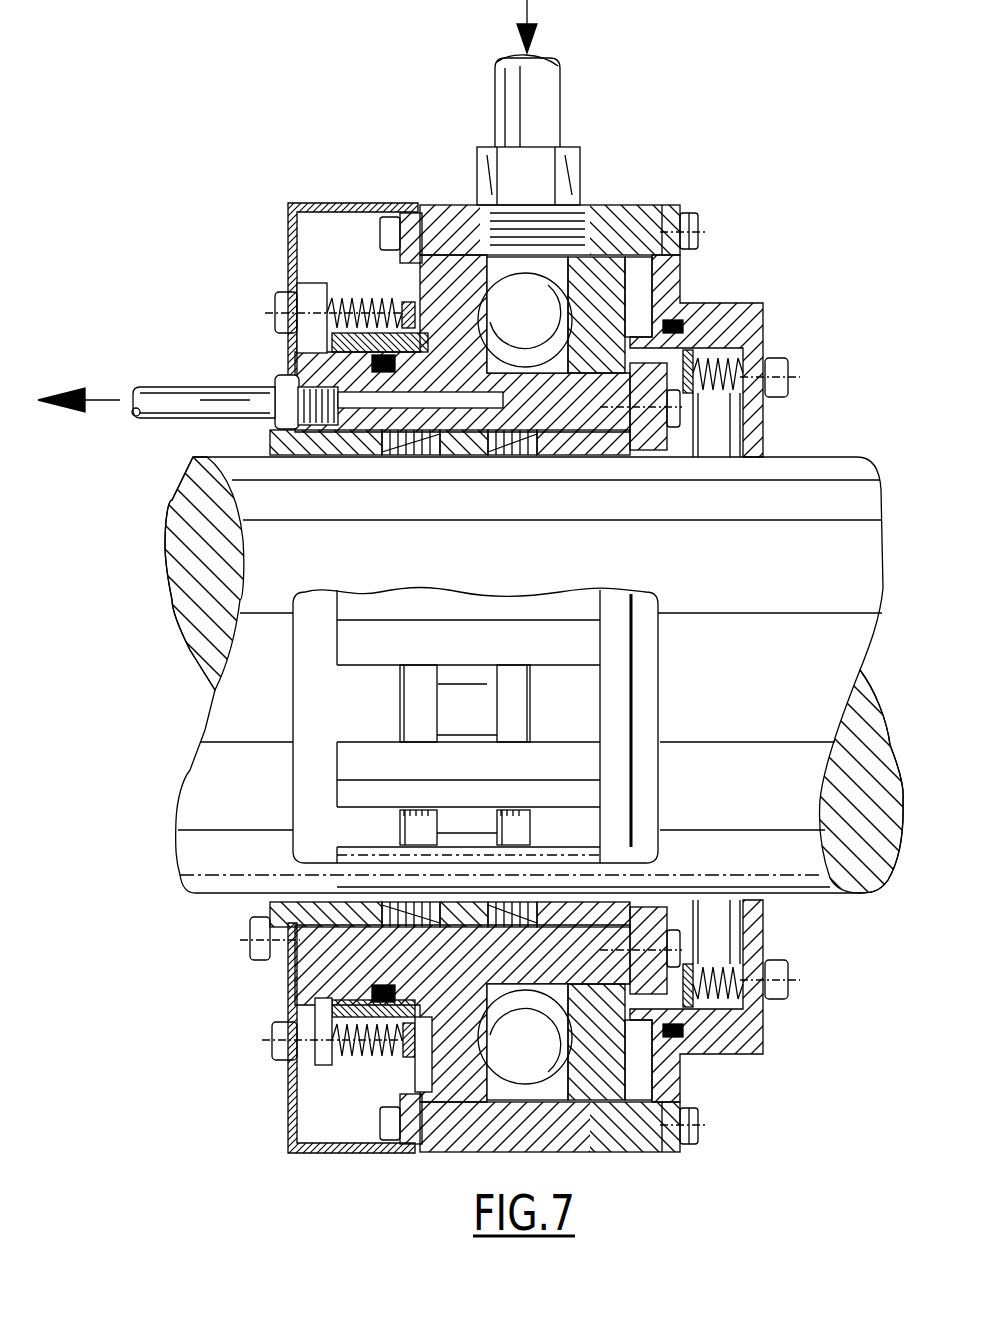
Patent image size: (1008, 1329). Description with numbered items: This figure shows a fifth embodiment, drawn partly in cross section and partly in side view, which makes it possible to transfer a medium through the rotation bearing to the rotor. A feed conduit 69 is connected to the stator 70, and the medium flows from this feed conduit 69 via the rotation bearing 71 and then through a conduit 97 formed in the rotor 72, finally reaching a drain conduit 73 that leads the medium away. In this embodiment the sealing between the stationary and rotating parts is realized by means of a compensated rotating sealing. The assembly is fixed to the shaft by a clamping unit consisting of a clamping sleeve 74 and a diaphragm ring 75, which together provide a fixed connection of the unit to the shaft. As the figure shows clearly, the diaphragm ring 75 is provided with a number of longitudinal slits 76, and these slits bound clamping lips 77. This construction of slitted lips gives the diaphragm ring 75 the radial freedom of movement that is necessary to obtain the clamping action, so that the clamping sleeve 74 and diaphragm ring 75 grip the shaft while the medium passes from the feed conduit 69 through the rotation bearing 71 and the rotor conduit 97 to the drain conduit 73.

The feed conduit 69 is at (548, 105).
The stator 70 is at (632, 222).
The rotation bearing 71 is at (513, 300).
The rotor 72 is at (180, 462).
The drain conduit 73 is at (160, 397).
The clamping sleeve 74 is at (268, 438).
The diaphragm ring 75 is at (393, 645).
The longitudinal slits 76 is at (372, 825).
The clamping lips 77 is at (585, 767).
The conduit 97 is at (360, 398).